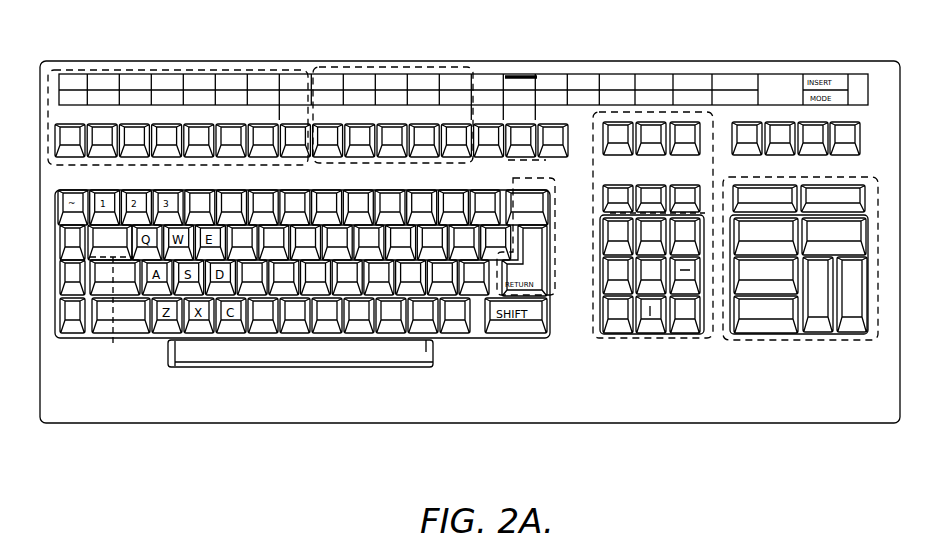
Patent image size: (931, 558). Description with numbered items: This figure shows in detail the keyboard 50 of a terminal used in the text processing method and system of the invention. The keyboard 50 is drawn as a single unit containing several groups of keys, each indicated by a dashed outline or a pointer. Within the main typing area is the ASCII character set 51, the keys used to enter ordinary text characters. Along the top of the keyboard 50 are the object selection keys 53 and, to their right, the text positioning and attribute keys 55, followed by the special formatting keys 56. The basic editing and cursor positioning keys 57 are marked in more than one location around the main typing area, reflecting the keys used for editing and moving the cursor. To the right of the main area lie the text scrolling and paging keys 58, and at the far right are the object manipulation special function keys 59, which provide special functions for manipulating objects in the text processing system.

The keyboard 50 is at (205, 424).
The ASCII character set 51 is at (163, 340).
The object selection keys 53 is at (172, 70).
The text positioning and attribute keys 55 is at (400, 70).
The special formatting keys 56 is at (548, 84).
The basic editing and cursor positioning keys 57 is at (118, 341).
The text scrolling and paging keys 58 is at (678, 112).
The object manipulation special function keys 59 is at (820, 343).